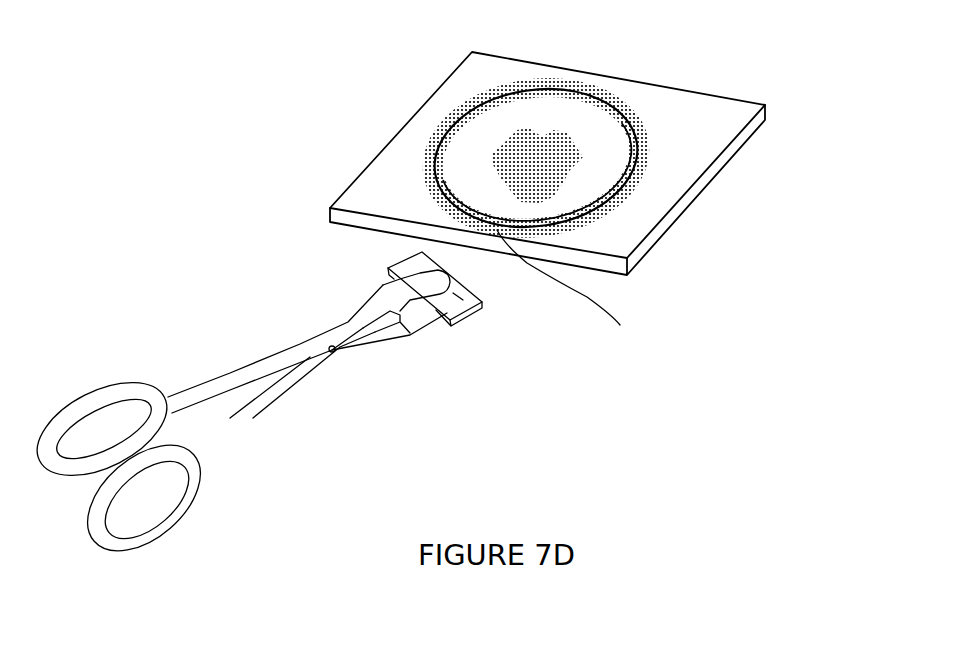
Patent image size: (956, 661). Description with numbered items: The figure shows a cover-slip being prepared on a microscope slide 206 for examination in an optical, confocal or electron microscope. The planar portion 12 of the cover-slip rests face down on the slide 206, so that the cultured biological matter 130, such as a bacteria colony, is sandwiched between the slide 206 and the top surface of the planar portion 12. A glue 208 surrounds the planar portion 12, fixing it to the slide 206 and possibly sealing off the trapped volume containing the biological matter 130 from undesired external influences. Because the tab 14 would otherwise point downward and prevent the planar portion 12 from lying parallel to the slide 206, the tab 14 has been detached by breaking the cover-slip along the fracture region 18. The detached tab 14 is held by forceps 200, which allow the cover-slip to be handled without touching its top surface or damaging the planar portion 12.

The planar portion 12 is at (470, 152).
The tab 14 is at (473, 306).
The fracture region 18 is at (462, 286).
The biological matter 130 is at (567, 170).
The forceps 200 is at (204, 384).
The microscope slide 206 is at (712, 130).
The glue 208 is at (625, 100).